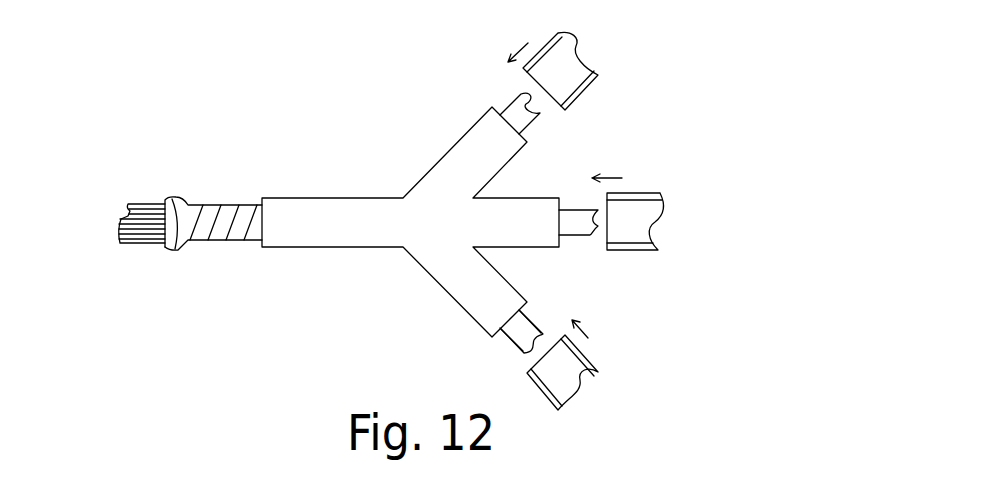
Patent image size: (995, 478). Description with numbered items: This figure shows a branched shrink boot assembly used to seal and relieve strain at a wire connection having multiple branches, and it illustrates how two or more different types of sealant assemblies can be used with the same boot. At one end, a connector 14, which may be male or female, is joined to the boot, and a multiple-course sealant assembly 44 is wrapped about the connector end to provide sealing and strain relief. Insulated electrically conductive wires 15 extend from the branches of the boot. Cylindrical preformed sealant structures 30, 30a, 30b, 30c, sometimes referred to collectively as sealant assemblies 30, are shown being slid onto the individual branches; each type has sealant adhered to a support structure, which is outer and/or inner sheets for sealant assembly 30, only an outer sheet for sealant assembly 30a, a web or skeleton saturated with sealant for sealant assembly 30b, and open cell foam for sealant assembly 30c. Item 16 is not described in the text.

The connector body 16 is at (375, 198).
The connector 14 is at (140, 243).
The sealant assembly 44 is at (237, 238).
The insulated electrically conductive wires 15 is at (507, 352).
The sealant assembly 30 is at (665, 221).
The sealant assembly 30a is at (553, 71).
The sealant assembly 30b is at (627, 212).
The sealant assembly 30c is at (562, 365).